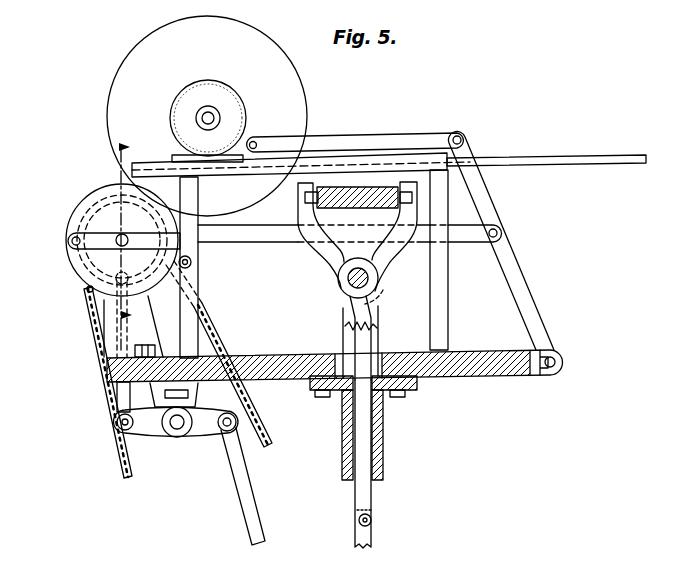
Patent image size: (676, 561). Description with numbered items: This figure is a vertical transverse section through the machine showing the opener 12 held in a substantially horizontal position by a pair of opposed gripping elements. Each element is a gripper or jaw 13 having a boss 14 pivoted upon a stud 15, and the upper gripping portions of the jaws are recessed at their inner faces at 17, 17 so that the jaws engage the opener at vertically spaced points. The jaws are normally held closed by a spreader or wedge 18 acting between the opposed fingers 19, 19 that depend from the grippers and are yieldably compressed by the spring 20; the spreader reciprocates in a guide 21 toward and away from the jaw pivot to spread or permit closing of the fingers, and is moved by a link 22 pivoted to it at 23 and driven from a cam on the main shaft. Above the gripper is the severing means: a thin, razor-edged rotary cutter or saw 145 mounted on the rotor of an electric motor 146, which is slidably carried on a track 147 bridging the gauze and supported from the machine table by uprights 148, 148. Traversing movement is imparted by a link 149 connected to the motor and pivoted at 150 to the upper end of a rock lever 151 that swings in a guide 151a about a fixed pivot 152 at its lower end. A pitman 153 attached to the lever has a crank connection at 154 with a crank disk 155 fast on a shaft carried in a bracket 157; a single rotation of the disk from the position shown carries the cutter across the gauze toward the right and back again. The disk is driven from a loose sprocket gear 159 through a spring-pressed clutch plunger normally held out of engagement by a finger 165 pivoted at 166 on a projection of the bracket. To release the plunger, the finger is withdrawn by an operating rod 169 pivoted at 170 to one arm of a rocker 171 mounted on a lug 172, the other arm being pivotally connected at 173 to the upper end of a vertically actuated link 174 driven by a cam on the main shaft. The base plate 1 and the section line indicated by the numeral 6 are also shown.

The base plate 1 is at (476, 373).
The section line 6- 6 is at (129, 236).
The opener 12 is at (366, 185).
The gripper or jaw 13 is at (304, 200).
The boss 14 is at (338, 280).
The stud 15 is at (368, 278).
The recess 17 is at (311, 206).
The spreader or wedge 18 is at (373, 340).
The fingers 19 is at (380, 313).
The spring 20 is at (345, 324).
The guide 21 is at (384, 446).
The link 22 is at (373, 540).
The pivot 23 is at (372, 518).
The rotary cutter or saw 145 is at (133, 53).
The electric motor 146 is at (202, 90).
The track 147 is at (420, 158).
The uprights 148 is at (193, 340).
The link 149 is at (327, 141).
The pivot 150 is at (463, 140).
The rock lever 151 is at (508, 257).
The guide 151a is at (590, 158).
The fixed pivot 152 is at (557, 361).
The pitman 153 is at (285, 237).
The crank connection 154 is at (69, 244).
The crank disk 155 is at (78, 214).
The bracket 157 is at (113, 329).
The sprocket wheel or gear 159 is at (88, 291).
The finger 165 is at (196, 299).
The pivot 166 is at (192, 263).
The operating rod 169 is at (117, 405).
The pivot 170 is at (117, 423).
The rocker 171 is at (155, 435).
The lug 172 is at (190, 400).
The pivot 173 is at (224, 431).
The link 174 is at (250, 503).